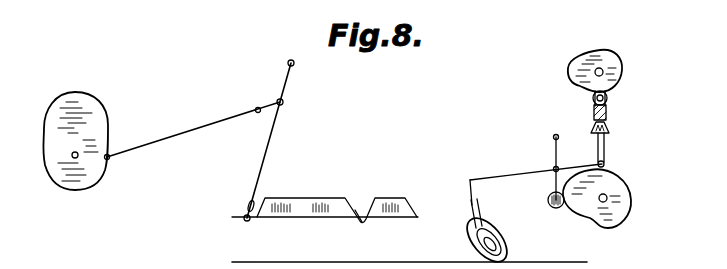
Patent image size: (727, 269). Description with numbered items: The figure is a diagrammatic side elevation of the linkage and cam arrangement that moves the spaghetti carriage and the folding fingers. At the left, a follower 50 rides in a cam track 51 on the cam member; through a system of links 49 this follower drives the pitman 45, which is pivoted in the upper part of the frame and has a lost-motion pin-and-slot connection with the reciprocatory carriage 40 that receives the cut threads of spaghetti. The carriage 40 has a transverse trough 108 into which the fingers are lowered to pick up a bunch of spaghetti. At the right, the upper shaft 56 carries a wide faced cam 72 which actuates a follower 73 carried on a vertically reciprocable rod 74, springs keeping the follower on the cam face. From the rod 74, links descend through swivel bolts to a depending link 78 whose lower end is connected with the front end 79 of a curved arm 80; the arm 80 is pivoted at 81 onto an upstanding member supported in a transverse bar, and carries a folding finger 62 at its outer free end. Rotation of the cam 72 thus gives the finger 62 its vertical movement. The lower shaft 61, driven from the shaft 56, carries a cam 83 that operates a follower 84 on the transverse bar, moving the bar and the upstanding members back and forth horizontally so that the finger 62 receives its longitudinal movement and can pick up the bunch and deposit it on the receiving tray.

The cam track 51 is at (100, 105).
The follower 50 is at (108, 156).
The system of links 49 is at (207, 125).
The pitman 45 is at (268, 150).
The reciprocatory carriage 40 is at (316, 206).
The transverse trough 108 is at (366, 212).
The folding finger 62 is at (471, 217).
The curved arm 80 is at (505, 176).
The pivot 81 is at (558, 168).
The follower 84 is at (552, 208).
The shaft 56 is at (601, 69).
The wide faced cam 72 is at (617, 60).
The follower 73 is at (608, 98).
The vertically reciprocable rod 74 is at (606, 112).
The depending link 78 is at (605, 150).
The front end of curved arm 79 is at (605, 164).
The shaft 61 is at (606, 196).
The cam 83 is at (614, 198).